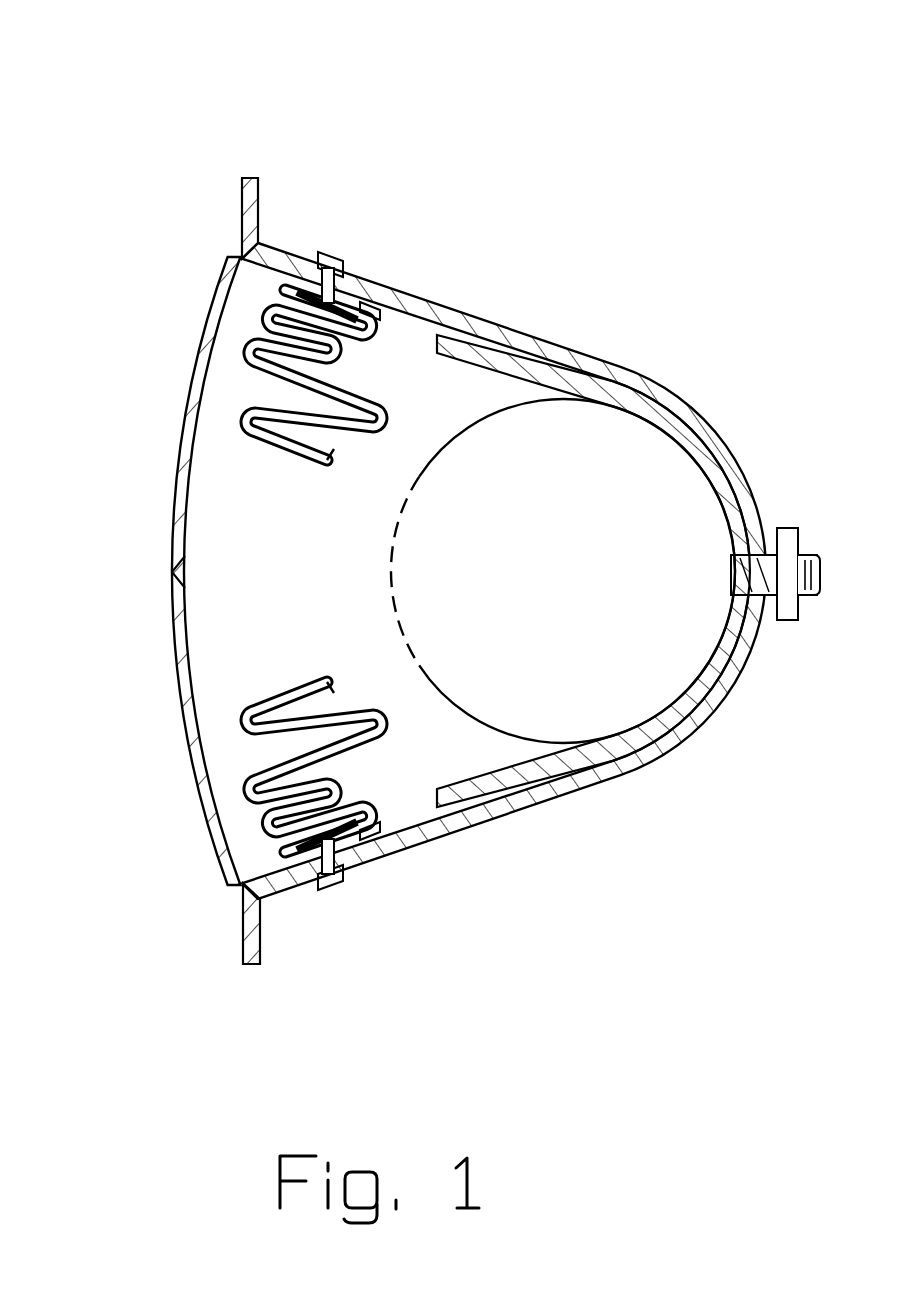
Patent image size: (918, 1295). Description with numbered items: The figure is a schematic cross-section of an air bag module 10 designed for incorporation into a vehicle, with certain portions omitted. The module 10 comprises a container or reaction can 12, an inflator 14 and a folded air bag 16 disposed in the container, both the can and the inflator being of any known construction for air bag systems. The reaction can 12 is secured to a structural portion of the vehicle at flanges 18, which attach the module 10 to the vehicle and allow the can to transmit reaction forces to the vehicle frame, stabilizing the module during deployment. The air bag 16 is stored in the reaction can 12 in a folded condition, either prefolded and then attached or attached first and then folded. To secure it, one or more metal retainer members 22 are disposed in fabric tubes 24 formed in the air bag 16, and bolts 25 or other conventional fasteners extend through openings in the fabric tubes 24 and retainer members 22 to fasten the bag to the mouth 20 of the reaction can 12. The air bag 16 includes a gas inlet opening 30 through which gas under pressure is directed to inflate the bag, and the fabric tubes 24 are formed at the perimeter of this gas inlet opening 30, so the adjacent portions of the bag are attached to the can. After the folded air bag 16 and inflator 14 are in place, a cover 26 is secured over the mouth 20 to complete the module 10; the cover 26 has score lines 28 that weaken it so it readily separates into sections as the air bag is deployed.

The air bag module 10 is at (163, 125).
The reaction can 12 is at (645, 378).
The inflator 14 is at (541, 401).
The air bag 16 is at (253, 787).
The flanges 18 is at (248, 208).
The mouth 20 is at (367, 855).
The retainer members 22 is at (312, 850).
The fabric tubes 24 is at (295, 858).
The bolts 25 is at (333, 262).
The cover 26 is at (183, 673).
The score lines 28 is at (173, 572).
The gas inlet opening 30 is at (226, 340).